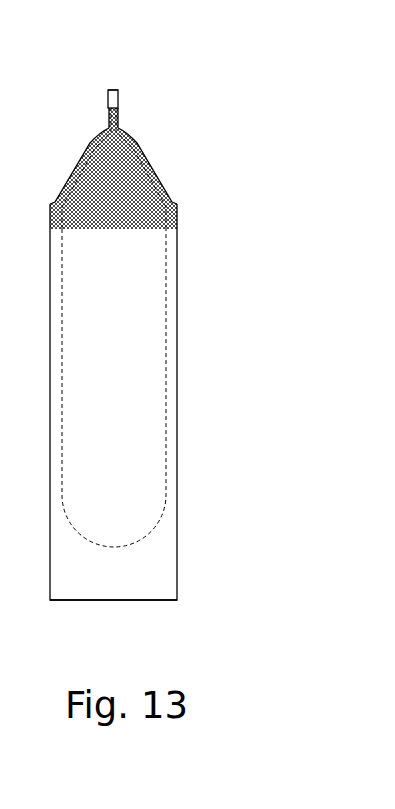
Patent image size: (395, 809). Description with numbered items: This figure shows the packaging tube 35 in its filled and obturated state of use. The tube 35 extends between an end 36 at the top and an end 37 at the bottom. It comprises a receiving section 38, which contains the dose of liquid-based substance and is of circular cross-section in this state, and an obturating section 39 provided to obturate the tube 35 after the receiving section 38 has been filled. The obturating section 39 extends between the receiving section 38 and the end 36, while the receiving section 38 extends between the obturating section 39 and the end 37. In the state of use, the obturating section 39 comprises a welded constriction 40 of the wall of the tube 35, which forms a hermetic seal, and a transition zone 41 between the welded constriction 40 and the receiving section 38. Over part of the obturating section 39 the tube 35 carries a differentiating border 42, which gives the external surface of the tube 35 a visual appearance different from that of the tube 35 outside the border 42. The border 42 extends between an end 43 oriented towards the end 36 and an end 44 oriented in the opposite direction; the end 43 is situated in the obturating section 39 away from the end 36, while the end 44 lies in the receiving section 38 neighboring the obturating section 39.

The packaging tube 35 is at (203, 83).
The end 36 is at (112, 90).
The end 37 is at (110, 601).
The receiving section 38 is at (221, 473).
The obturating section 39 is at (180, 160).
The welded constriction 40 is at (108, 105).
The transition zone 41 is at (78, 165).
The differentiating border 42 is at (155, 213).
The end 43 is at (119, 103).
The end 44 is at (127, 232).